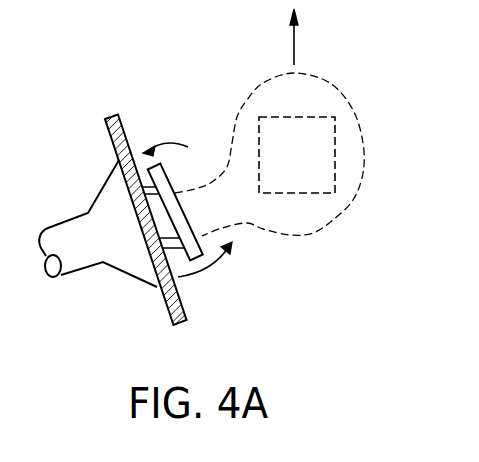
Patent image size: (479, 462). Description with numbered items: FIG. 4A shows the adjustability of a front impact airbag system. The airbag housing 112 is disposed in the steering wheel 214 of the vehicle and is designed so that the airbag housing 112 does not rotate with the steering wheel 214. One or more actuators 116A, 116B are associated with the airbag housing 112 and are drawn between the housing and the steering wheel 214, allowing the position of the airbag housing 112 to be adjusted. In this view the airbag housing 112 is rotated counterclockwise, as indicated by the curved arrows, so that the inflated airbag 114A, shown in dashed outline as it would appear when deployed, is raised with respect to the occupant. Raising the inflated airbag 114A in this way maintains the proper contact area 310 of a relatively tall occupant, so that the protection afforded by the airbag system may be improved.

The steering wheel 214 is at (166, 309).
The airbag housing 112 is at (177, 210).
The actuator 116A is at (148, 190).
The actuator 116B is at (167, 247).
The inflated airbag 114A is at (328, 77).
The contact area 310 is at (313, 193).